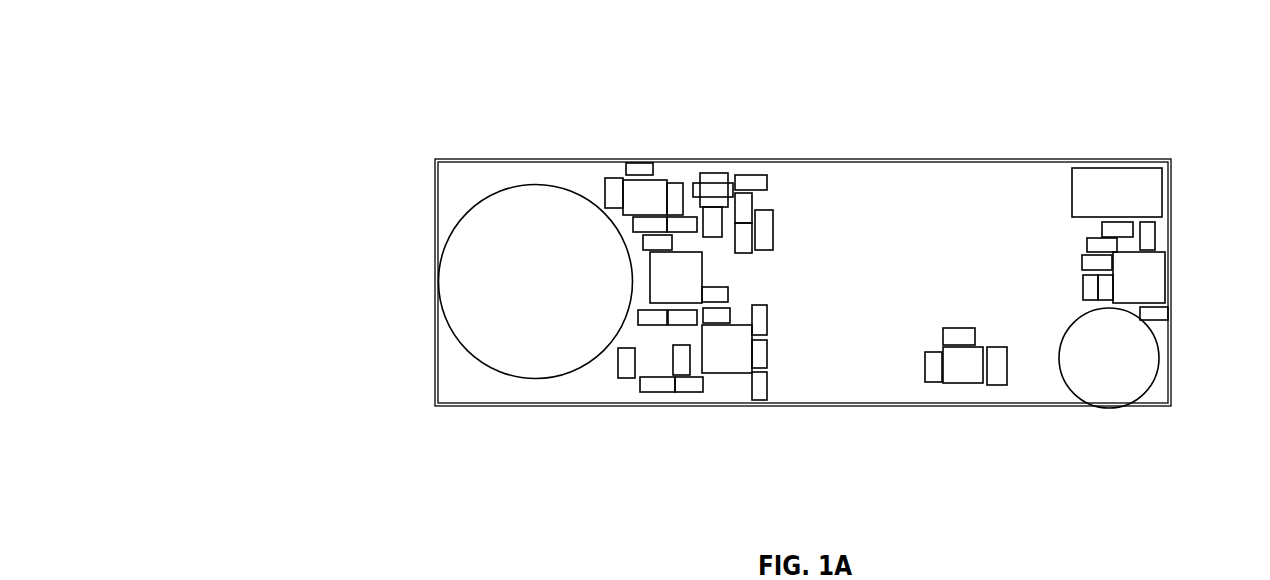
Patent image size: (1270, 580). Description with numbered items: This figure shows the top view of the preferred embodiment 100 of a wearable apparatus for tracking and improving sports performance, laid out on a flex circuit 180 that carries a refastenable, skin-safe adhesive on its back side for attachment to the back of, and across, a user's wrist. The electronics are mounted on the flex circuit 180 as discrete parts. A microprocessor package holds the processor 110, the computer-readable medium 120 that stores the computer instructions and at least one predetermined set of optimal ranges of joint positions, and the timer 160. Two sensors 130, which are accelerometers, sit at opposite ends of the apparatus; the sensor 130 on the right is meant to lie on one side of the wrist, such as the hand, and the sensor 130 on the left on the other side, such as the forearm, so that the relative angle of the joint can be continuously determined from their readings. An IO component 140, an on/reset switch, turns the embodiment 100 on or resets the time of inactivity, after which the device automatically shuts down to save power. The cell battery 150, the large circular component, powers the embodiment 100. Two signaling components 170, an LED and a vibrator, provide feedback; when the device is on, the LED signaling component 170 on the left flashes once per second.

The wearable apparatus 100 is at (451, 93).
The processor 110 is at (776, 413).
The computer-readable medium 120 is at (776, 413).
The sensor 130 is at (1223, 223).
The IO component 140 is at (1098, 177).
The battery 150 is at (563, 310).
The timer 160 is at (727, 365).
The signaling component 170 is at (1132, 380).
The flex circuit 180 is at (953, 306).